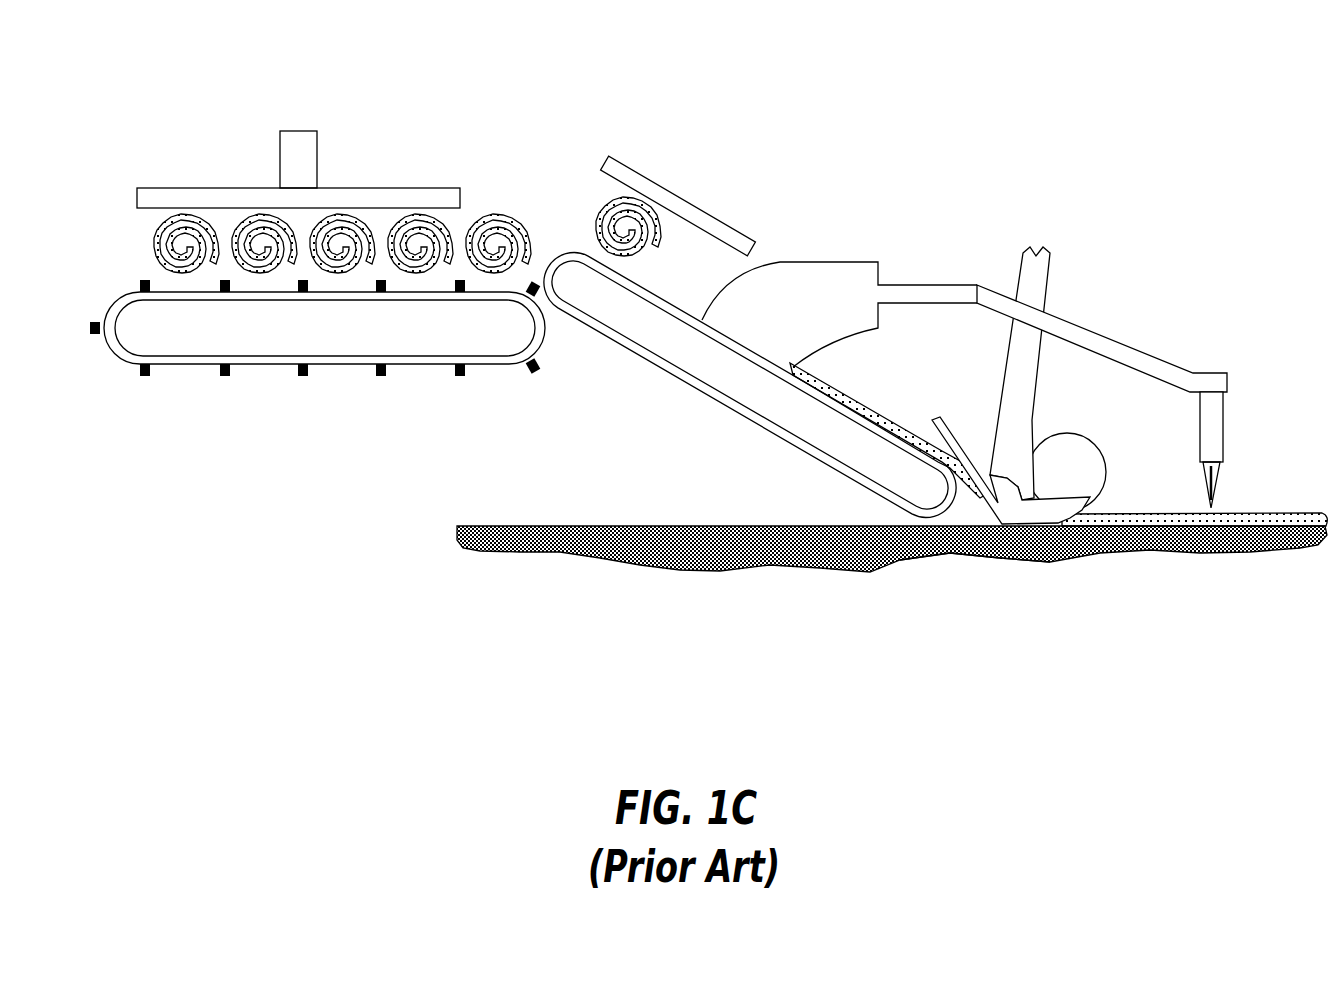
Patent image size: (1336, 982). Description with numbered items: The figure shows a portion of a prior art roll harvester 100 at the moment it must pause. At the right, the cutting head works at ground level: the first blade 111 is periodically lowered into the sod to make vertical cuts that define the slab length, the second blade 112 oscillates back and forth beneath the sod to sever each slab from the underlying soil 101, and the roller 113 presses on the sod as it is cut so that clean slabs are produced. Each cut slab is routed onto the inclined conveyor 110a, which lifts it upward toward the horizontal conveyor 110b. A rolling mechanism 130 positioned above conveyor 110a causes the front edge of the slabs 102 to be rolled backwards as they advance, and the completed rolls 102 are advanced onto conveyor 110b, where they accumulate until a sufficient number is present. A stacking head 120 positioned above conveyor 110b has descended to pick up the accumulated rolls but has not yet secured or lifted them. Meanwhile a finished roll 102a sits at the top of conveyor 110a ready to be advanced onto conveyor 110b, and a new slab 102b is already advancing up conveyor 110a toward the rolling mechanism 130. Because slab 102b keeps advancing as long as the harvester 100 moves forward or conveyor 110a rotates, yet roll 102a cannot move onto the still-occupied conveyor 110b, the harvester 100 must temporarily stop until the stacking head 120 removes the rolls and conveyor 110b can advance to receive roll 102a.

The roll harvester 100 is at (738, 62).
The underlying soil 101 is at (463, 542).
The rolls of sod 102 is at (480, 198).
The roll 102a is at (660, 203).
The new slab 102b is at (818, 376).
The inclined conveyor 110a is at (627, 352).
The conveyor 110b is at (273, 362).
The first blade 111 is at (1218, 495).
The second blade 112 is at (990, 552).
The roller 113 is at (1095, 446).
The stacking head 120 is at (197, 187).
The rolling mechanism 130 is at (752, 230).